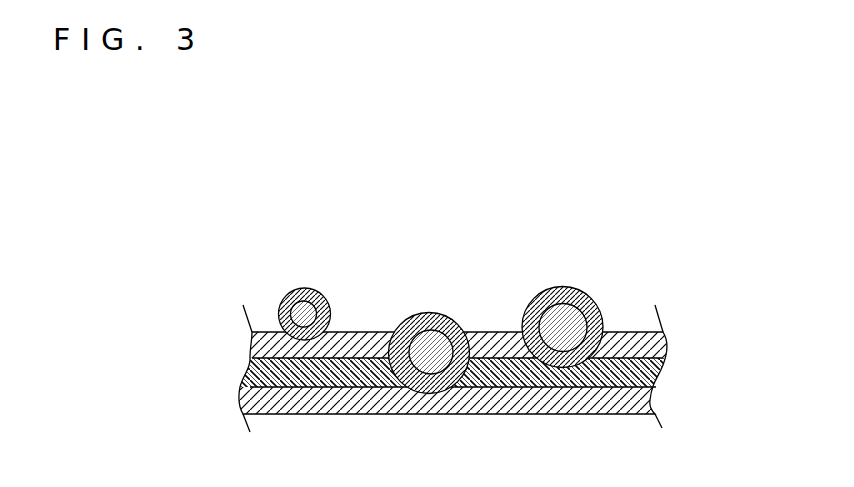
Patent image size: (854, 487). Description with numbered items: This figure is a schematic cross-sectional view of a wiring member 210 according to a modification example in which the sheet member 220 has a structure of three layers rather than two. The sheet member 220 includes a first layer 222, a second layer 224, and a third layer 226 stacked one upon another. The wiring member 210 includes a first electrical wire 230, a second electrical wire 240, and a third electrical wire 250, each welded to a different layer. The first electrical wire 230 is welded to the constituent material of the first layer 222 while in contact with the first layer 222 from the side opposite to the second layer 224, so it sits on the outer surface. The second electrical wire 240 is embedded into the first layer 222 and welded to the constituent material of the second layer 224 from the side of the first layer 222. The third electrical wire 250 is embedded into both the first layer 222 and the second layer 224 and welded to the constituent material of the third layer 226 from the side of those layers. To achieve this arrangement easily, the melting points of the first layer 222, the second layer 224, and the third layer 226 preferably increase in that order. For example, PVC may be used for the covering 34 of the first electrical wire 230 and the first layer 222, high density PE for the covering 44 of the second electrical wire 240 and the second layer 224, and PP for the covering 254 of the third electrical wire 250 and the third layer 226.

The wiring member 210 is at (515, 212).
The sheet member 220 is at (632, 329).
The first layer 222 is at (667, 342).
The second layer 224 is at (658, 374).
The third layer 226 is at (655, 403).
The first electrical wire 230 is at (316, 290).
The covering 34 is at (288, 292).
The third electrical wire 250 is at (431, 312).
The covering 254 is at (403, 320).
The second electrical wire 240 is at (567, 287).
The covering 44 is at (533, 296).